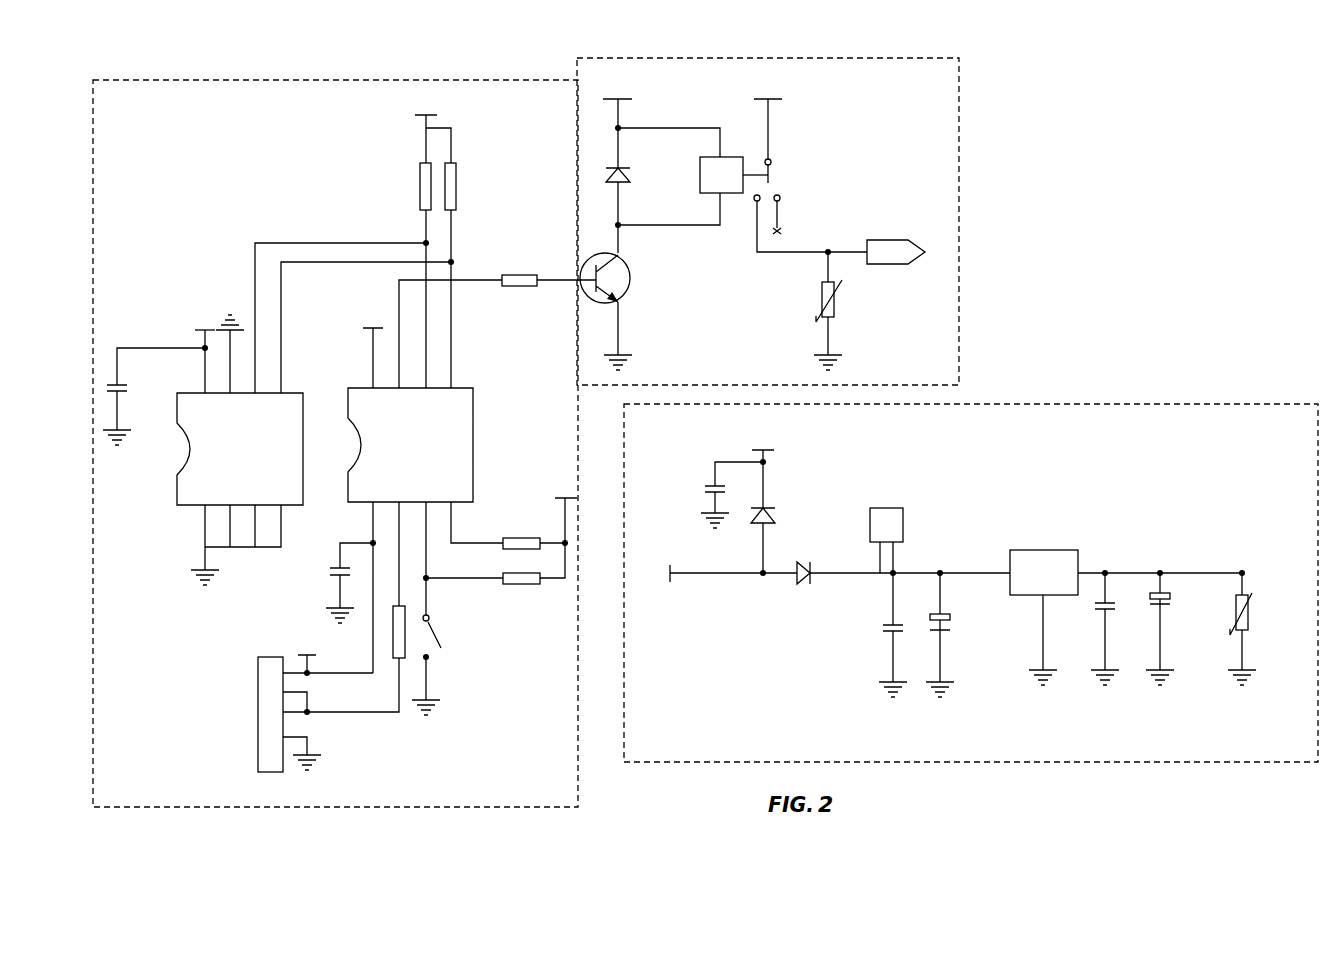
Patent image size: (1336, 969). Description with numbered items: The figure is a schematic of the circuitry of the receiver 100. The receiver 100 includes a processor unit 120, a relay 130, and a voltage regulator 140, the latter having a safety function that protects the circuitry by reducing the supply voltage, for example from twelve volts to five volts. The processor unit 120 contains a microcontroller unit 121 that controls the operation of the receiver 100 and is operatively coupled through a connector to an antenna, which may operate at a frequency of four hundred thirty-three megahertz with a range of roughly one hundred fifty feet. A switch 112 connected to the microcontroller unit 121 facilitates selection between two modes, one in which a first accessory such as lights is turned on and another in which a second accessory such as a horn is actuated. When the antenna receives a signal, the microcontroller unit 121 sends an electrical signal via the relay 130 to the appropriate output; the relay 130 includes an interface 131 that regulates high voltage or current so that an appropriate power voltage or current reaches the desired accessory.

The receiver 100 is at (430, 43).
The processor unit 120 is at (152, 81).
The microcontroller unit 121 is at (466, 411).
The switch 112 is at (470, 634).
The relay 130 is at (775, 56).
The interface 131 is at (731, 158).
The voltage regulator 140 is at (1125, 402).